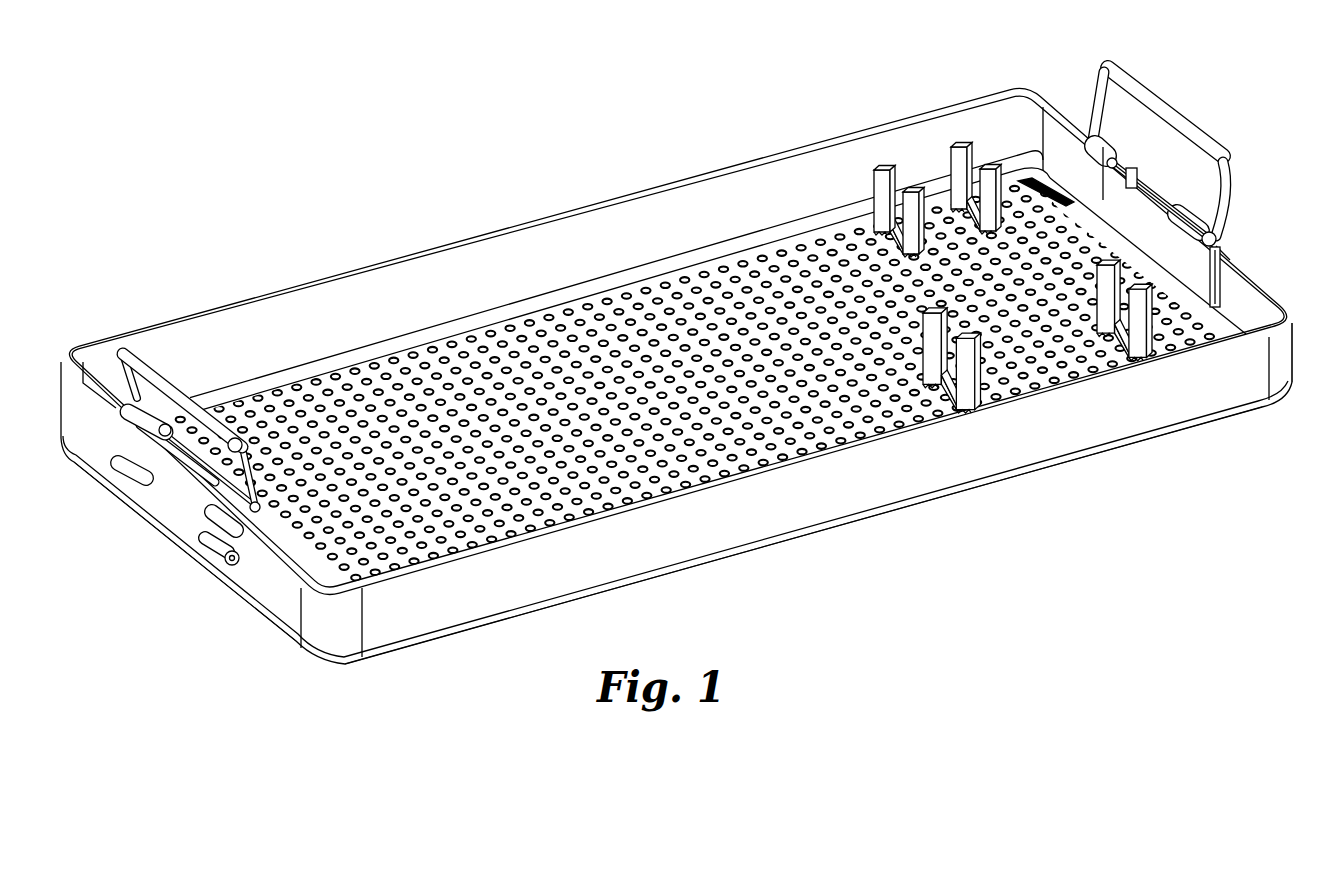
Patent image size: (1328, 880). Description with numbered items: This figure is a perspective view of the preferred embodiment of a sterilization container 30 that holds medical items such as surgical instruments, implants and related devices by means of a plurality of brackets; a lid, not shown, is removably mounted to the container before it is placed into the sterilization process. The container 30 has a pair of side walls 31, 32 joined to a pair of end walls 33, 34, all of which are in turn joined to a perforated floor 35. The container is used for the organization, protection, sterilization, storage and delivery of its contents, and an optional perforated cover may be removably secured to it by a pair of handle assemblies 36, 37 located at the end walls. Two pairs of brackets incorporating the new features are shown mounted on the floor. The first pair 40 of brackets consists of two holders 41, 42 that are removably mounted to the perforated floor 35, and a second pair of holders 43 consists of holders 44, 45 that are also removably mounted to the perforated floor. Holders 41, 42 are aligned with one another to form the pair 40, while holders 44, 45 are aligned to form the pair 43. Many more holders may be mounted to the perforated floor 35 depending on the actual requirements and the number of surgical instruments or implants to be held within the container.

The sterilization container 30 is at (577, 212).
The side wall 31 is at (481, 237).
The side wall 32 is at (745, 518).
The end wall 33 is at (262, 584).
The end wall 34 is at (1257, 303).
The perforated floor 35 is at (553, 504).
The handle assembly 36 is at (153, 368).
The handle assembly 37 is at (1177, 110).
The first pair of brackets 40 is at (887, 162).
The holder 41 is at (880, 195).
The holder 42 is at (958, 146).
The second pair of holders 43 is at (1125, 285).
The holder 44 is at (957, 382).
The holder 45 is at (1120, 343).